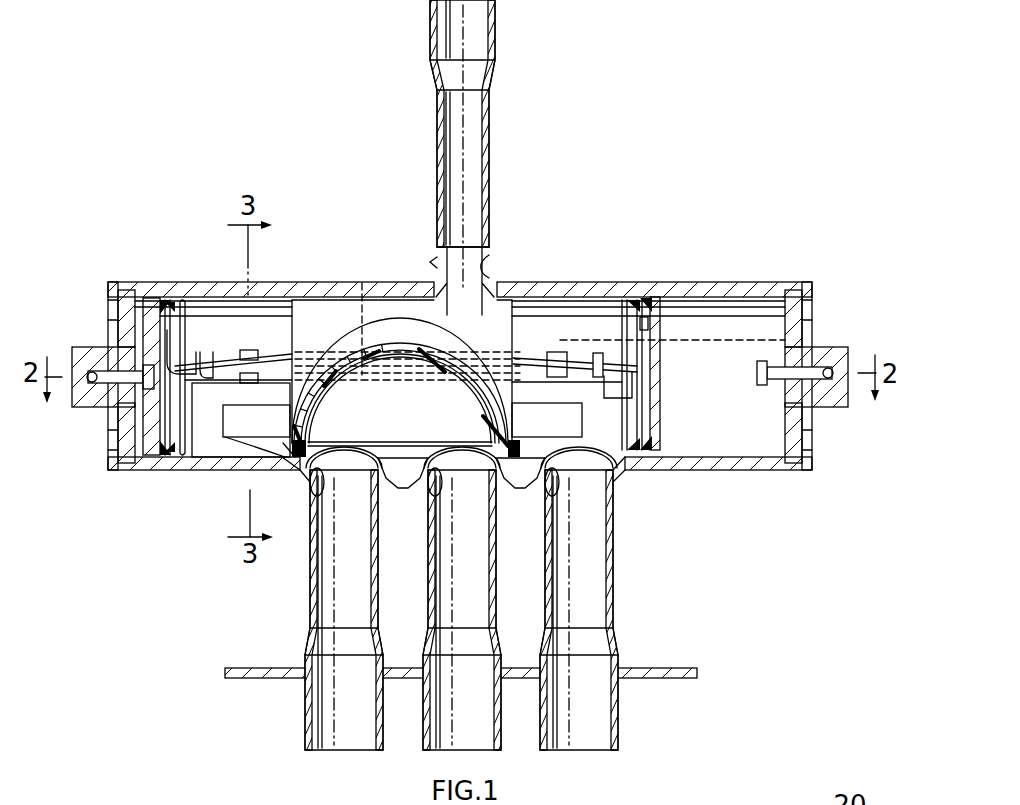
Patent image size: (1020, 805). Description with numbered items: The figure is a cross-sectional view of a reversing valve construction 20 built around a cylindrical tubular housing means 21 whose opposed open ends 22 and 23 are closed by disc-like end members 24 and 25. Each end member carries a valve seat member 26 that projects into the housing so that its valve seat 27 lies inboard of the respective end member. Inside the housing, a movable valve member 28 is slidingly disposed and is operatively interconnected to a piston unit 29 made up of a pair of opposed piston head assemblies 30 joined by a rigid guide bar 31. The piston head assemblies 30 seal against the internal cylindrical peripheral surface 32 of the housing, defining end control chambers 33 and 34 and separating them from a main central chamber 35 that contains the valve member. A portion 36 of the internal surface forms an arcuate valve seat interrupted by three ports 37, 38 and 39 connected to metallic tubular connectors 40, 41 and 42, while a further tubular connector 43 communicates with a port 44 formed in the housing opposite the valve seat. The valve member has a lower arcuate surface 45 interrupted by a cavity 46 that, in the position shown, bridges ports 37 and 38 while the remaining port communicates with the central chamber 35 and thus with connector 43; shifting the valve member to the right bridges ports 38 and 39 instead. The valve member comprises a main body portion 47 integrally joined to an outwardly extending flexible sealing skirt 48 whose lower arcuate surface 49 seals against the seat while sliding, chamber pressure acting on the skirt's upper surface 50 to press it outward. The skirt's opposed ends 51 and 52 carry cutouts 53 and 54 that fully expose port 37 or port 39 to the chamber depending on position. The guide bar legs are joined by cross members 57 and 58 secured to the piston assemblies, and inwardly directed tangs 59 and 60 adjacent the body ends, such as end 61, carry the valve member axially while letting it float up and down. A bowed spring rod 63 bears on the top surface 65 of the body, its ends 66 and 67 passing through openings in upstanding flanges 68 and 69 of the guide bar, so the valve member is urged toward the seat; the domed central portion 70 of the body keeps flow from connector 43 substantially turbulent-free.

The reversing valve construction 20 is at (756, 103).
The tubular housing means 21 is at (566, 282).
The open end 22 is at (108, 295).
The open end 23 is at (815, 297).
The end member 24 is at (124, 322).
The end member 25 is at (797, 327).
The valve seat member 26 is at (92, 400).
The valve seat 27 is at (155, 387).
The movable valve member 28 is at (514, 315).
The piston unit 29 is at (580, 353).
The piston head assembly 30 is at (194, 306).
The guide member or bar 31 is at (402, 378).
The internal cylindrical peripheral surface 32 is at (725, 300).
The end control chamber 33 is at (140, 455).
The end control chamber 34 is at (713, 447).
The main central chamber 35 is at (272, 300).
The valve seat 36 is at (300, 468).
The port 37 is at (316, 497).
The port 38 is at (424, 498).
The port 39 is at (558, 494).
The tubular connector 40 is at (303, 713).
The tubular connector 41 is at (418, 733).
The tubular connector 42 is at (620, 727).
The tubular connector 43 is at (492, 125).
The port 44 is at (481, 257).
The arcuate surface 45 is at (506, 468).
The cavity or passage means 46 is at (467, 405).
The main body portion 47 is at (380, 345).
The flexible sealing skirt 48 is at (283, 443).
The lower arcuate surface 49 is at (262, 440).
The upper surface 50 is at (270, 408).
The end 51 is at (224, 428).
The end 52 is at (582, 420).
The cutout 53 is at (295, 462).
The cutout 54 is at (576, 445).
The cross member 57 is at (188, 318).
The cross member 58 is at (618, 386).
The tang 59 is at (293, 360).
The tang 60 is at (527, 375).
The end 61 is at (290, 326).
The spring rod 63 is at (250, 350).
The top surface 65 is at (362, 288).
The end 66 is at (192, 310).
The end 67 is at (660, 323).
The upstanding flange 68 is at (200, 352).
The upstanding flange 69 is at (624, 300).
The domed central portion 70 is at (432, 357).